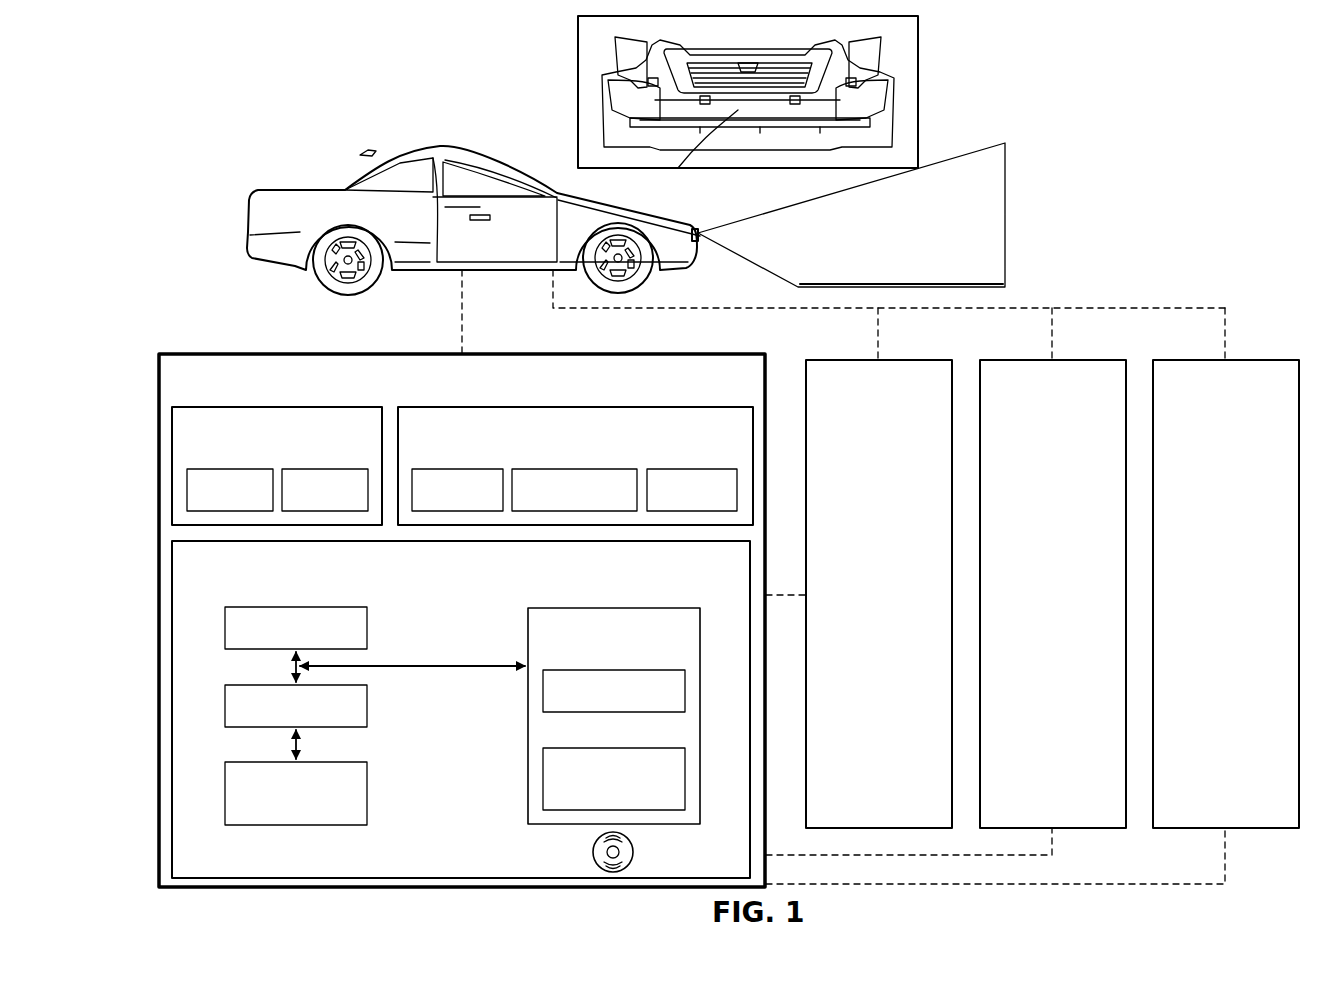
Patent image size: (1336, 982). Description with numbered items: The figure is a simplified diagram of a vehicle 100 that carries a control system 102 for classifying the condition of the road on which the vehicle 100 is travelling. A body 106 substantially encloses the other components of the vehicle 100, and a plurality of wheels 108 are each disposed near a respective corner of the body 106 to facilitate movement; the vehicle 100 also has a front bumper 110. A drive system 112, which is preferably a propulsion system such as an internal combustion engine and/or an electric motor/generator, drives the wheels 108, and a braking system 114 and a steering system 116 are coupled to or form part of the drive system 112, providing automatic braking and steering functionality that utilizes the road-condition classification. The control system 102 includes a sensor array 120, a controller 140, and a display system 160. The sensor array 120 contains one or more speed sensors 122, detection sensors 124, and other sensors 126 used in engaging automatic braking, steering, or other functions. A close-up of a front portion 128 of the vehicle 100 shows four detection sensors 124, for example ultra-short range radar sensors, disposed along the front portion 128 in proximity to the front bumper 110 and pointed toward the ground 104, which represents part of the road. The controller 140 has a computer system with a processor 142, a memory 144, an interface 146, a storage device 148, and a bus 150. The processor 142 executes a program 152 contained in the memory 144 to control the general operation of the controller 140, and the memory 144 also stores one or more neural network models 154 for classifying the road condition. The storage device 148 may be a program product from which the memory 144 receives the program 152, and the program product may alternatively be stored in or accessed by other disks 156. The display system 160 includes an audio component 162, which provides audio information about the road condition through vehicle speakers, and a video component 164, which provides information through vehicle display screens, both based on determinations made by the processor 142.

The vehicle 100 is at (505, 192).
The control system 102 is at (228, 354).
The ground 104 is at (1005, 287).
The body 106 is at (310, 115).
The wheels 108 is at (312, 272).
The front bumper 110 is at (700, 252).
The drive system 112 is at (850, 360).
The braking system 114 is at (1026, 360).
The steering system 116 is at (1252, 360).
The sensor array 120 is at (688, 407).
The speed sensors 122 is at (468, 469).
The detection sensors 124 is at (648, 86).
The other sensors 126 is at (683, 469).
The front portion 128 is at (905, 32).
The controller 140 is at (172, 604).
The processor 142 is at (295, 607).
The memory 144 is at (634, 608).
The interface 146 is at (270, 727).
The storage device 148 is at (295, 825).
The bus 150 is at (296, 666).
The program 152 is at (543, 692).
The neural network models 154 is at (543, 776).
The disks 156 is at (597, 840).
The display system 160 is at (240, 407).
The audio component 162 is at (188, 492).
The video component 164 is at (355, 469).